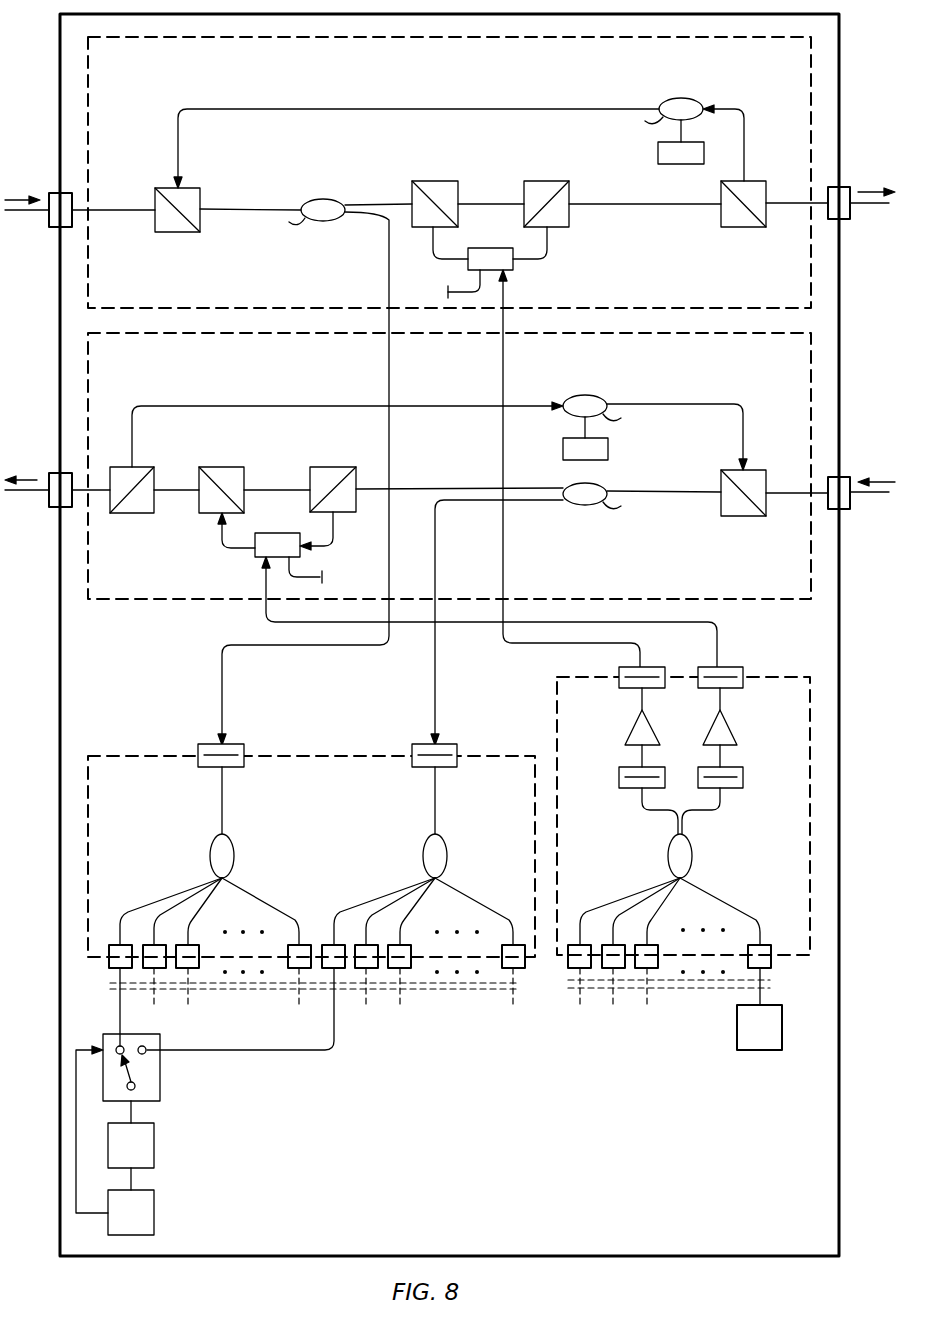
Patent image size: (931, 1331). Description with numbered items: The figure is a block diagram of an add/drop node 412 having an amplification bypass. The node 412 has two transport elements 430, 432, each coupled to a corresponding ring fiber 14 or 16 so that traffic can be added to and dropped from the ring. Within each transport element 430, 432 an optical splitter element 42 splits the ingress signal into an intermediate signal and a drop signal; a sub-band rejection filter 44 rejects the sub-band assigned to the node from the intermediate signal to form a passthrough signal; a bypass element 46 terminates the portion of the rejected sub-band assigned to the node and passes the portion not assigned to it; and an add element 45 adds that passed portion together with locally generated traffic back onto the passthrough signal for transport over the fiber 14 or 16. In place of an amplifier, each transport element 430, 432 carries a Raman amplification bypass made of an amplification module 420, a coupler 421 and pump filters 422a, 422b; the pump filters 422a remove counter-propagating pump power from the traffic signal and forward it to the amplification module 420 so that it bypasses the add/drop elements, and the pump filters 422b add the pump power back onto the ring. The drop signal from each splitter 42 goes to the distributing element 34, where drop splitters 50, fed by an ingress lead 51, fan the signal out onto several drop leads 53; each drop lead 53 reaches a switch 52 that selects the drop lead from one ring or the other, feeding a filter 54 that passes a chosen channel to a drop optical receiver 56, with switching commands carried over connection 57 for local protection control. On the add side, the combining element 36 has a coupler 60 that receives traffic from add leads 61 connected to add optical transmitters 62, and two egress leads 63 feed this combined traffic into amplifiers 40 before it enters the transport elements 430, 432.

The fiber 14 is at (37, 214).
The fiber 16 is at (37, 495).
The distributing element 34 is at (326, 749).
The combining element 36 is at (549, 722).
The amplifier 40 is at (630, 728).
The optical splitter element 42 is at (312, 199).
The sub-band rejection filter 44 is at (433, 181).
The add element 45 is at (548, 181).
The bypass element 46 is at (520, 272).
The drop splitter 50 is at (210, 856).
The optical fiber ingress lead 51 is at (222, 800).
The switch 52 is at (160, 1068).
The optical fiber drop lead 53 is at (520, 990).
The filter 54 is at (154, 1145).
The drop optical receiver 56 is at (154, 1212).
The connection 57 is at (80, 1047).
The coupler 60 is at (692, 856).
The optical fiber add lead 61 is at (772, 983).
The add optical transmitter 62 is at (737, 1025).
The optical fiber egress lead 63 is at (638, 797).
The add/drop node 412 is at (686, 1266).
The amplification module 420 is at (658, 152).
The coupler 421 is at (681, 98).
The pump filter 422a is at (745, 227).
The pump filter 422b is at (178, 232).
The transport element 430 is at (400, 86).
The transport element 432 is at (258, 384).